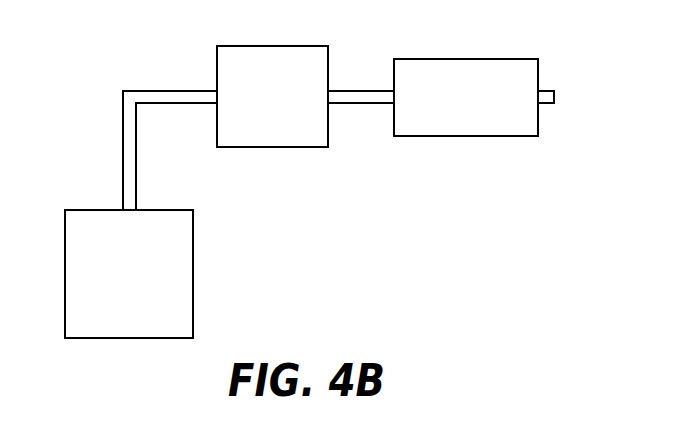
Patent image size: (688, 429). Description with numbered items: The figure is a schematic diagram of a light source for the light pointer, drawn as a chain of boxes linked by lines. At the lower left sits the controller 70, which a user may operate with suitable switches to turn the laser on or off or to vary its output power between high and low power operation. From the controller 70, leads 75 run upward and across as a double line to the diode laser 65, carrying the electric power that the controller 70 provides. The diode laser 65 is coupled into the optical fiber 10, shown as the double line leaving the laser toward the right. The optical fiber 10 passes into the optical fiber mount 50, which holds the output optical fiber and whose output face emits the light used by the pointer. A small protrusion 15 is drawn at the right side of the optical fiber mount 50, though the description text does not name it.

The optical fiber 10 is at (369, 103).
The outlet port 15 is at (554, 95).
The optical fiber mount 50 is at (418, 59).
The diode laser 65 is at (290, 147).
The controller 70 is at (193, 255).
The leads 75 is at (183, 91).